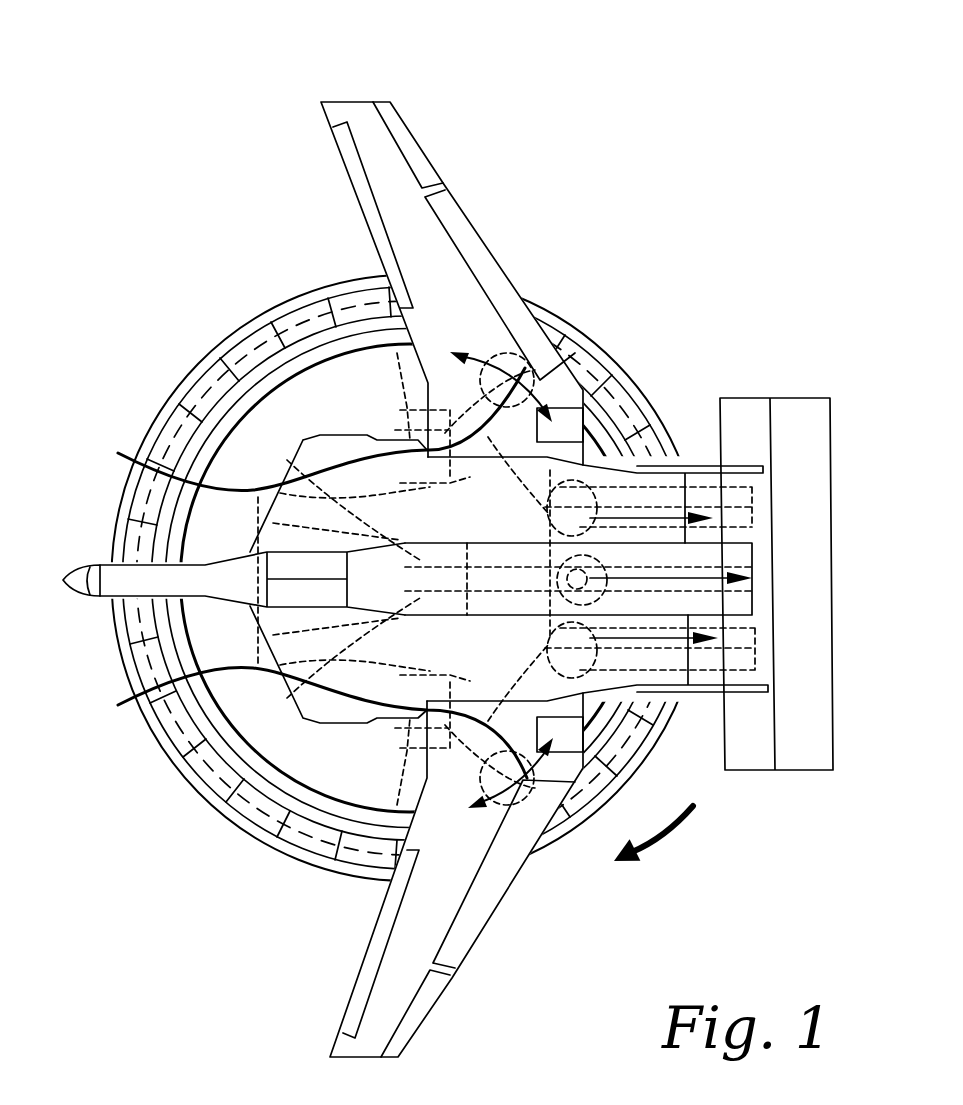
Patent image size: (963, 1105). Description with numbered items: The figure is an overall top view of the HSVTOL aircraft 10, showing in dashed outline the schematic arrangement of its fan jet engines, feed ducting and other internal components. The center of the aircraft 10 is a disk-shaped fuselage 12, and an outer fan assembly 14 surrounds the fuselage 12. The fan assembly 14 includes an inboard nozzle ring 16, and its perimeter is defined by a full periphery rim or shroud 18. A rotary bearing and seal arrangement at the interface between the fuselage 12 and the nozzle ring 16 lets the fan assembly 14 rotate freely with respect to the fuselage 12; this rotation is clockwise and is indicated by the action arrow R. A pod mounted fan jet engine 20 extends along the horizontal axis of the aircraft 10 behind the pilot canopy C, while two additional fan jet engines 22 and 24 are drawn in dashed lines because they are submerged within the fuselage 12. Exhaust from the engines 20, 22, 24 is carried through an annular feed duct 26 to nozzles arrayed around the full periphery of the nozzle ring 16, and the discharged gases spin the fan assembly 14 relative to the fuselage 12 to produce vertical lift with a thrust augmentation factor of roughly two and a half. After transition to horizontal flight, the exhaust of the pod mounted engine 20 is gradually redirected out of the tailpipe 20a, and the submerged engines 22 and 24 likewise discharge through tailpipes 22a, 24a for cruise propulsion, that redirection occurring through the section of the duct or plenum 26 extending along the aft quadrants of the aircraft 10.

The HSVTOL aircraft 10 is at (650, 205).
The fuselage 12 is at (297, 752).
The outer fan assembly 14 is at (190, 885).
The inboard nozzle ring 16 is at (145, 673).
The rim or shroud 18 is at (147, 719).
The pod mounted fan jet engine 20 is at (300, 482).
The tailpipe 20a is at (747, 593).
The fan jet engine 22 is at (363, 277).
The tailpipe 22a is at (763, 517).
The fan jet engine 24 is at (410, 750).
The tailpipe 24a is at (780, 677).
The annular feed duct 26 is at (653, 403).
The pilot canopy C is at (75, 572).
The action arrow R is at (667, 850).